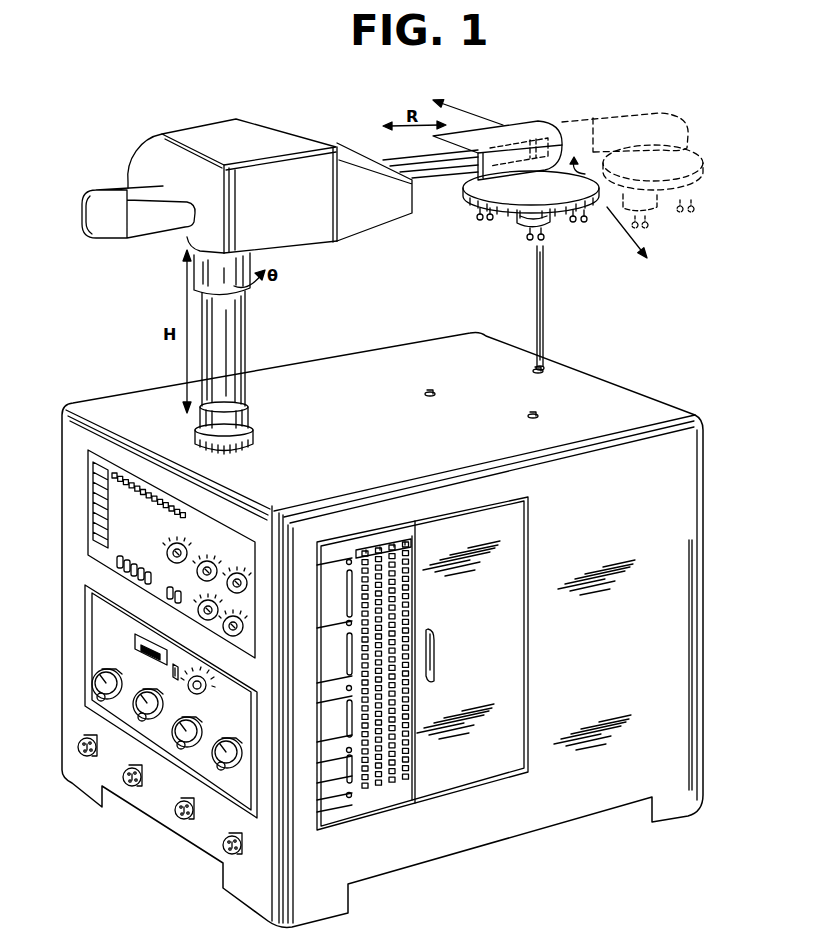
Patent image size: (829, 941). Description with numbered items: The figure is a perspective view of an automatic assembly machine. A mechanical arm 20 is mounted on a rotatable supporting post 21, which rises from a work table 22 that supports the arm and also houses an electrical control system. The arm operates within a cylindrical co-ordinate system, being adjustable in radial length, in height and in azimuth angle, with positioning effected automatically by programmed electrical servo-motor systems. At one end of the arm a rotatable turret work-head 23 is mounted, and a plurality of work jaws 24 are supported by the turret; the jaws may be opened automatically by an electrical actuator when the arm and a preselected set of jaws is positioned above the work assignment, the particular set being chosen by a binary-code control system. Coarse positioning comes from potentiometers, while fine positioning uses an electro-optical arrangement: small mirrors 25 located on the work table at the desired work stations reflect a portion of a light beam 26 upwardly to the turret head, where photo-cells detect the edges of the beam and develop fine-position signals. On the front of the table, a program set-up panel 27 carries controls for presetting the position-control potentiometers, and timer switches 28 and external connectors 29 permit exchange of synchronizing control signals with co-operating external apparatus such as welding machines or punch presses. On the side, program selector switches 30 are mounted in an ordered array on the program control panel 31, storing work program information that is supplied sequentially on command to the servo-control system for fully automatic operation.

The mechanical arm 20 is at (407, 155).
The rotatable supporting post 21 is at (237, 332).
The work table 22 is at (650, 403).
The rotatable turret work-head 23 is at (566, 200).
The work jaws 24 is at (526, 236).
The small mirrors 25 is at (531, 415).
The light beam 26 is at (537, 297).
The program set-up panel 27 is at (203, 539).
The timer switches 28 is at (132, 710).
The external connectors 29 is at (78, 748).
The program selector switches 30 is at (360, 643).
The program control panel 31 is at (333, 590).